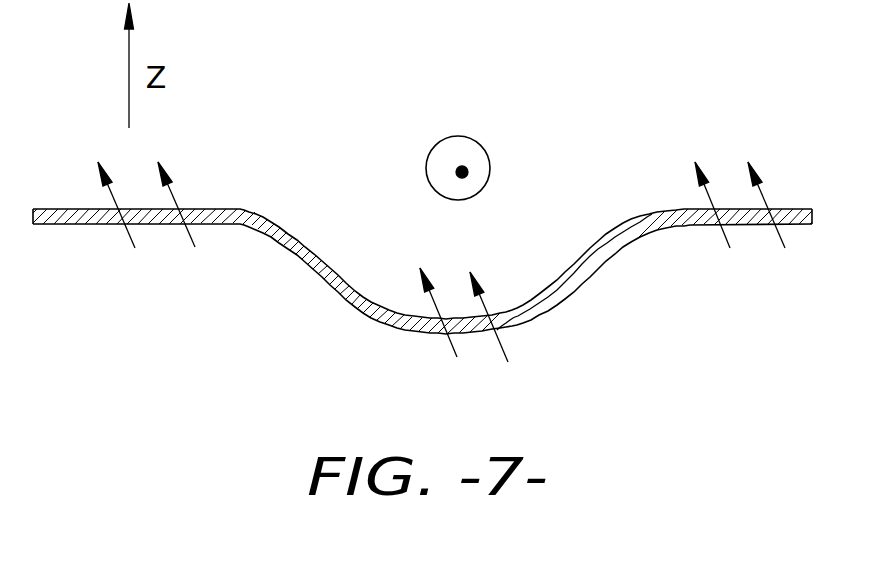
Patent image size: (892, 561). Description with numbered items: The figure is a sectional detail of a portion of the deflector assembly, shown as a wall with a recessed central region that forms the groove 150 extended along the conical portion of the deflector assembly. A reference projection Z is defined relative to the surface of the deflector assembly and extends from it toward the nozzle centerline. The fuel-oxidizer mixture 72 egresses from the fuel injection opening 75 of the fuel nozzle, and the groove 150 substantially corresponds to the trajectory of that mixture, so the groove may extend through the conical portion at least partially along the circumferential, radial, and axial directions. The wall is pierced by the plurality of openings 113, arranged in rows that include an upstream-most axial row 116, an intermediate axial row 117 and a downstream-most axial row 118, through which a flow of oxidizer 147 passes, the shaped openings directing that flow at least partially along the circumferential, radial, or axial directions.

The fuel-oxidizer mixture 72 is at (460, 166).
The fuel injection opening 75 is at (468, 135).
The plurality of openings 113 is at (423, 304).
The upstream-most axial row 116 is at (118, 228).
The intermediate axial row 117 is at (500, 333).
The downstream-most axial row 118 is at (768, 228).
The flow of oxidizer 147 is at (190, 235).
The groove 150 is at (512, 281).